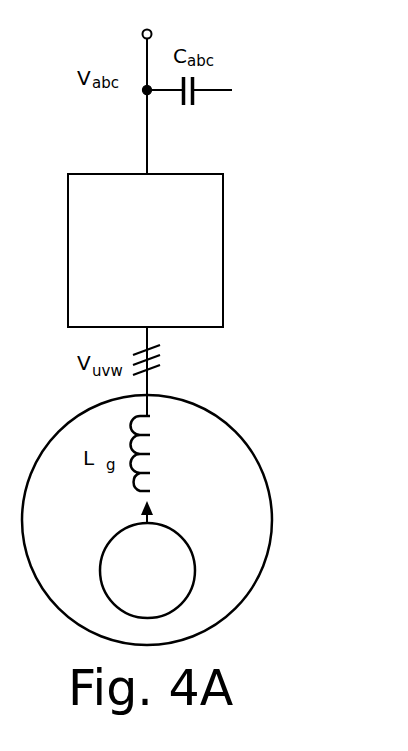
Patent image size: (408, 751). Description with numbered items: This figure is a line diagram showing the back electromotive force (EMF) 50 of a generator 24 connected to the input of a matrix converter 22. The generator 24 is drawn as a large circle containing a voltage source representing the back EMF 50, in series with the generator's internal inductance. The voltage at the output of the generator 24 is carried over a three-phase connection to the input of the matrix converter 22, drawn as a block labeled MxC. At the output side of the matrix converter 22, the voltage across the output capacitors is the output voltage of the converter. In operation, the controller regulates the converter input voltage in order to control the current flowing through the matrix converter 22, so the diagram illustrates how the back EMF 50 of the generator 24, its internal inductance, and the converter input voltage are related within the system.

The matrix converter 22 is at (188, 174).
The generator 24 is at (228, 422).
The back electromotive force (EMF) 50 is at (178, 535).